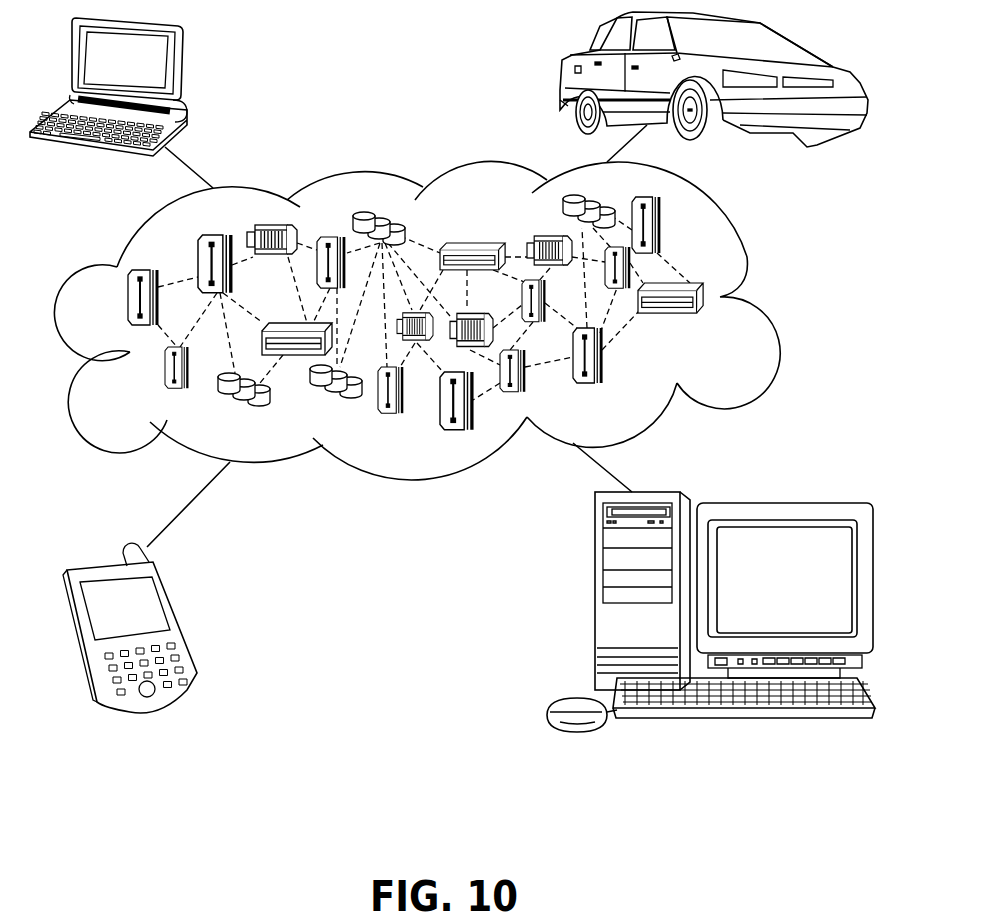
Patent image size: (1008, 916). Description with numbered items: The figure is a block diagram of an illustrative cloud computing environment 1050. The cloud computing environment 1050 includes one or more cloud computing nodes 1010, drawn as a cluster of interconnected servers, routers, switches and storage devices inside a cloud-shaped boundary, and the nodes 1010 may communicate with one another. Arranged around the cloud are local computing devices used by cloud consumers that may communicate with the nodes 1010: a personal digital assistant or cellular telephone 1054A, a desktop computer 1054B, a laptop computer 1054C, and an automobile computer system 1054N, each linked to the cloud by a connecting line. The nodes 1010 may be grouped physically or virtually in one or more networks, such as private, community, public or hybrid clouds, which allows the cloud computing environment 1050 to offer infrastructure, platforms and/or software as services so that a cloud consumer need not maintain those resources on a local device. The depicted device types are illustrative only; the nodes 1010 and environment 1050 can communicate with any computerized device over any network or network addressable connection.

The cloud computing nodes 1010 is at (473, 336).
The cloud computing environment 1050 is at (748, 260).
The personal digital assistant or cellular telephone 1054A is at (180, 622).
The desktop computer 1054B is at (597, 600).
The laptop computer 1054C is at (185, 63).
The automobile computer system 1054N is at (567, 67).